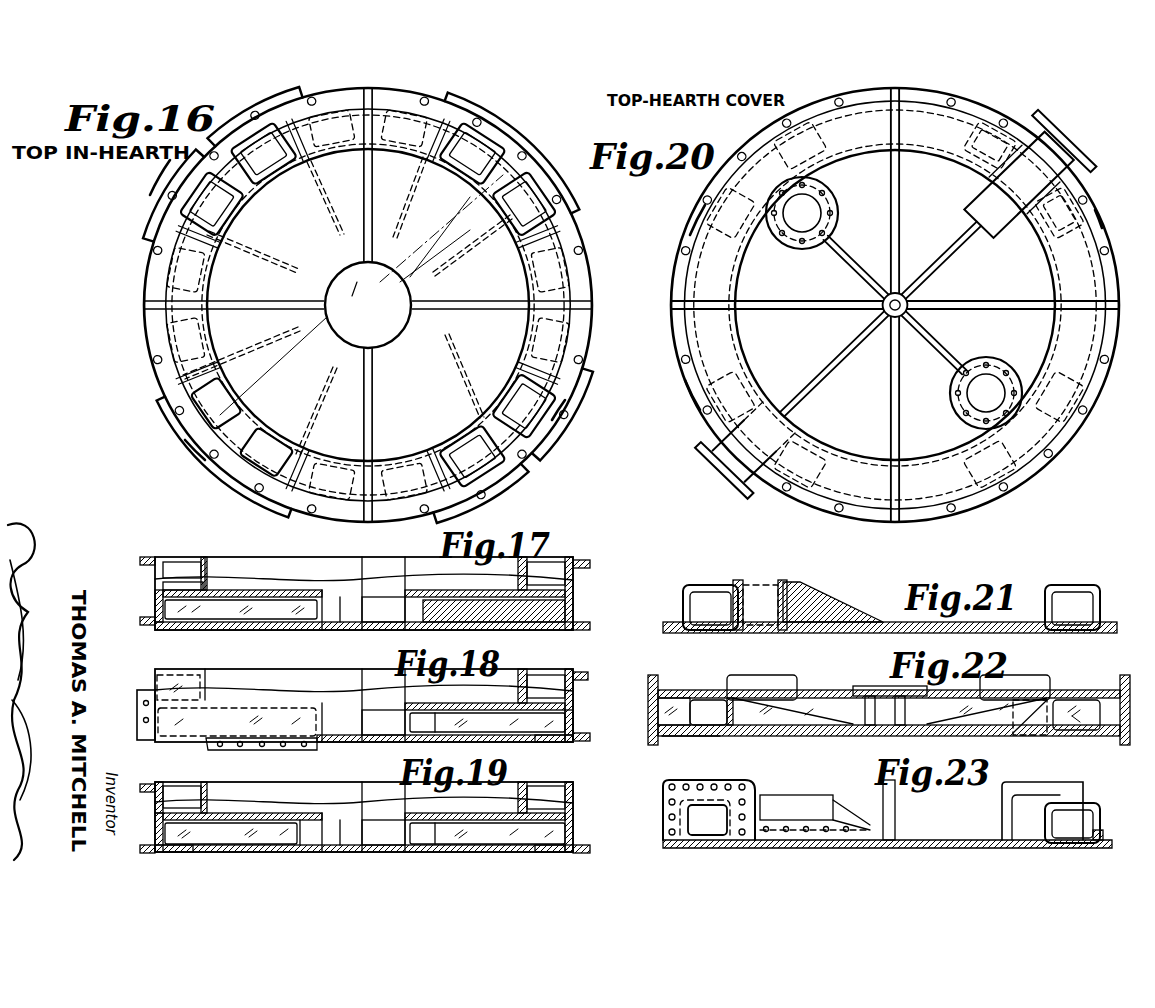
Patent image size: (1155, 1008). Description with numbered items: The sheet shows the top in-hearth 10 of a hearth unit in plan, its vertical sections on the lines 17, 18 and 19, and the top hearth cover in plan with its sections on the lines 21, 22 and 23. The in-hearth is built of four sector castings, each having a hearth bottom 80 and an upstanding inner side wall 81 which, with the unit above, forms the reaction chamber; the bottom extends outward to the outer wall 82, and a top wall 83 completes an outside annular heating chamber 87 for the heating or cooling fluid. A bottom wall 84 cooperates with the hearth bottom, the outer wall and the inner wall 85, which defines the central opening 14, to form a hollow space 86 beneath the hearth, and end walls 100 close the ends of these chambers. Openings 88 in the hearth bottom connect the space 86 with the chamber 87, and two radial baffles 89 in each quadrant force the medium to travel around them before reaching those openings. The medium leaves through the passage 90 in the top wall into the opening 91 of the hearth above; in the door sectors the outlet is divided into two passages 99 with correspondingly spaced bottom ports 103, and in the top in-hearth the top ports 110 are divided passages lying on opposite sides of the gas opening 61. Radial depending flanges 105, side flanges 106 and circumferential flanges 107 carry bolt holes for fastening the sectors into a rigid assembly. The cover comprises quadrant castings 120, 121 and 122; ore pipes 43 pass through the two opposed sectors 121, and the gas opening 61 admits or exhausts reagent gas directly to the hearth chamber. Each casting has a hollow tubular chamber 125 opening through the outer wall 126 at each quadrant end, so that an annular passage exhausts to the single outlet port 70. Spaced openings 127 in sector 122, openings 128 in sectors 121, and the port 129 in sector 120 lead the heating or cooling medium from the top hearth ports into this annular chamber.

In FIG. 16, the top in-hearth 10 is at (212, 177).
In FIG. 16, the central opening 14 is at (368, 305).
In FIG. 17, the central opening 14 is at (383, 609).
In FIG. 18, the central opening 14 is at (383, 722).
In FIG. 19, the central opening 14 is at (383, 832).
In FIG. 16, the section line 17— 17 is at (458, 87).
In FIG. 16, the section line 18— 18 is at (550, 131).
In FIG. 16, the section line 19— 19 is at (580, 177).
In FIG. 20, the section line 21— 21 is at (785, 190).
In FIG. 20, the section line 22— 22 is at (1088, 122).
In FIG. 20, the section line 23— 23 is at (977, 173).
In FIG. 20, the ore feeding port 43 is at (894, 303).
In FIG. 21, the ore feeding port 43 is at (760, 605).
In FIG. 20, the gas opening 61 is at (1043, 160).
In FIG. 22, the gas opening 61 is at (1112, 708).
In FIG. 20, the heating gas port 70 is at (731, 478).
In FIG. 22, the heating gas port 70 is at (660, 712).
In FIG. 17, the hearth bottom 80 is at (282, 592).
In FIG. 18, the hearth bottom 80 is at (303, 705).
In FIG. 19, the hearth bottom 80 is at (262, 812).
In FIG. 17, the inner side wall 81 is at (210, 574).
In FIG. 17, the outer wall 82 is at (157, 612).
In FIG. 18, the outer wall 82 is at (575, 712).
In FIG. 19, the outer wall 82 is at (575, 823).
In FIG. 17, the top wall 83 is at (188, 558).
In FIG. 18, the top wall 83 is at (575, 673).
In FIG. 19, the top wall 83 is at (203, 790).
In FIG. 17, the bottom wall 84 is at (262, 630).
In FIG. 19, the bottom wall 84 is at (253, 852).
In FIG. 16, the inner wall 85 is at (332, 320).
In FIG. 17, the inner wall 85 is at (324, 609).
In FIG. 19, the inner wall 85 is at (324, 832).
In FIG. 17, the hollow space beneath the hearth 86 is at (422, 597).
In FIG. 19, the hollow space beneath the hearth 86 is at (310, 820).
In FIG. 17, the annular heating chamber 87 is at (197, 566).
In FIG. 18, the annular heating chamber 87 is at (548, 680).
In FIG. 19, the annular heating chamber 87 is at (568, 808).
In FIG. 16, the openings 88 is at (185, 288).
In FIG. 17, the openings 88 is at (170, 592).
In FIG. 16, the baffles 89 is at (340, 236).
In FIG. 17, the baffles 89 is at (241, 610).
In FIG. 18, the baffles 89 is at (487, 723).
In FIG. 19, the baffles 89 is at (365, 834).
In FIG. 16, the outlet passage 90 is at (241, 427).
In FIG. 19, the outlet passage 90 is at (182, 786).
In FIG. 16, the bottom port 91 is at (222, 413).
In FIG. 18, the bottom port 91 is at (550, 743).
In FIG. 19, the bottom port 91 is at (180, 853).
In FIG. 16, the divided outlet passages 99 is at (367, 304).
In FIG. 18, the end walls 100 is at (237, 722).
In FIG. 16, the spaced bottom ports 103 is at (560, 410).
In FIG. 19, the spaced bottom ports 103 is at (548, 853).
In FIG. 18, the radial depending flanges 105 is at (270, 750).
In FIG. 18, the side flanges 106 is at (145, 700).
In FIG. 16, the circumferential flanges 107 is at (218, 457).
In FIG. 17, the circumferential flanges 107 is at (590, 565).
In FIG. 18, the circumferential flanges 107 is at (590, 735).
In FIG. 19, the circumferential flanges 107 is at (150, 784).
In FIG. 16, the top ports 110 is at (525, 179).
In FIG. 19, the top ports 110 is at (552, 786).
In FIG. 20, the cover sector casting 120 is at (685, 390).
In FIG. 20, the cover sector casting 121 is at (684, 217).
In FIG. 20, the cover sector casting 122 is at (1104, 222).
In FIG. 20, the hollow tubular chamber 125 is at (1070, 265).
In FIG. 21, the hollow tubular chamber 125 is at (891, 607).
In FIG. 22, the hollow tubular chamber 125 is at (711, 711).
In FIG. 23, the hollow tubular chamber 125 is at (894, 823).
In FIG. 23, the outer wall 126 is at (712, 845).
In FIG. 20, the spaced openings 127 is at (977, 165).
In FIG. 23, the spaced openings 127 is at (1068, 848).
In FIG. 20, the spaced openings 128 is at (828, 167).
In FIG. 20, the port 129 is at (792, 420).
In FIG. 22, the port 129 is at (712, 738).